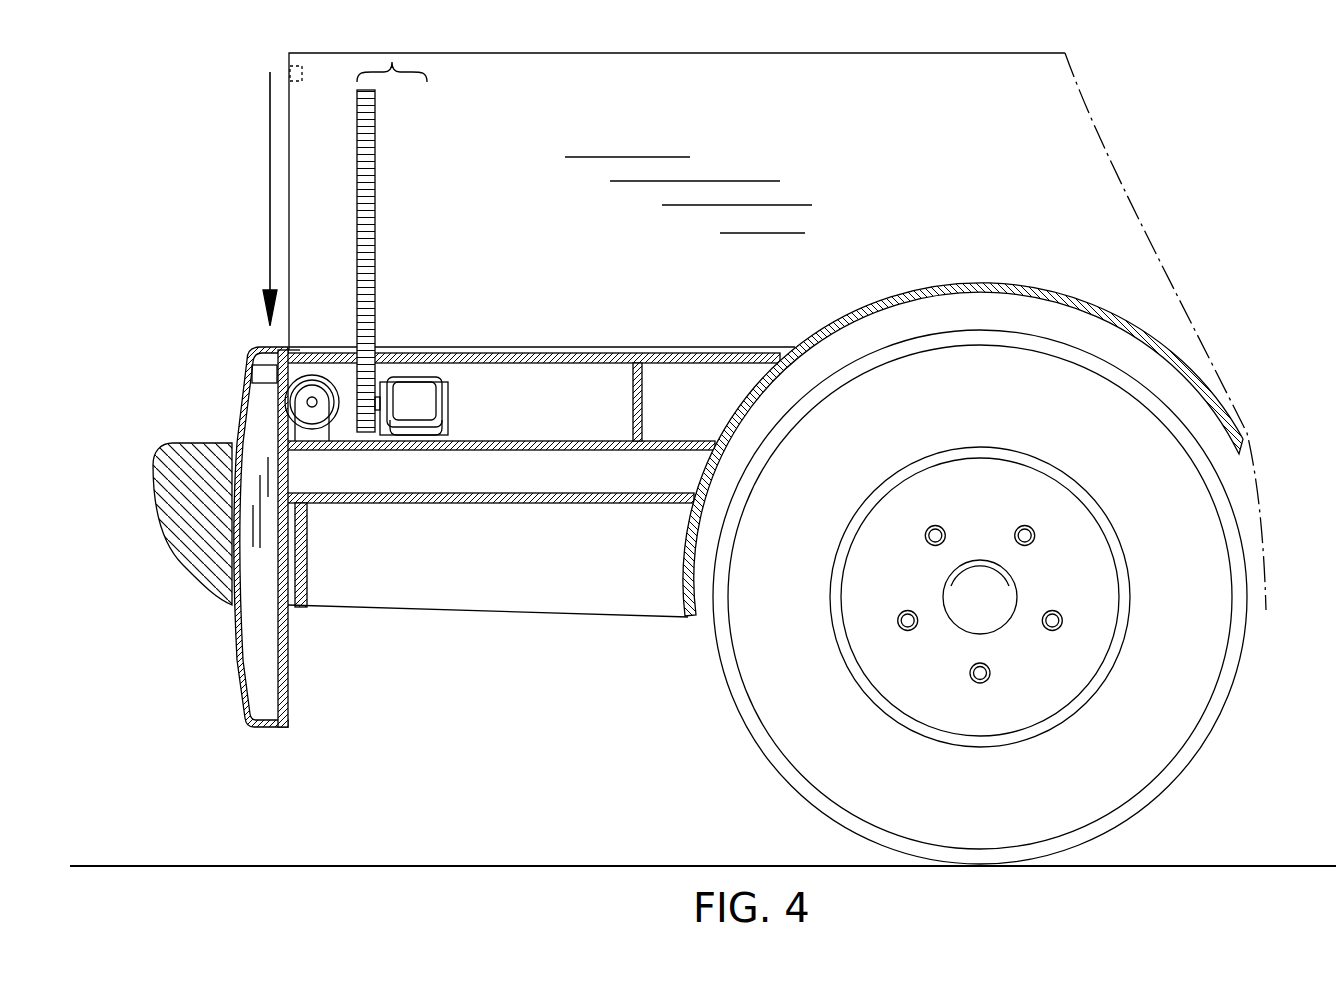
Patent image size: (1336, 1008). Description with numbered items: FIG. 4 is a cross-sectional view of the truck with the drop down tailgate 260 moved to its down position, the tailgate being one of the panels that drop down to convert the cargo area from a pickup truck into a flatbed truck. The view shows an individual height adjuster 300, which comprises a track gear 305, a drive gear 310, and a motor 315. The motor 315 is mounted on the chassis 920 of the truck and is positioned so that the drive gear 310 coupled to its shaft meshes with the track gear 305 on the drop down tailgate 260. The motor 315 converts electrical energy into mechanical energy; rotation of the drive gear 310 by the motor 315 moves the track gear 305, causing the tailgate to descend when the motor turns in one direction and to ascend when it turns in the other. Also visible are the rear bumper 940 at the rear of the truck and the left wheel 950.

The height adjuster 300 is at (392, 62).
The track gear 305 is at (368, 203).
The drive gear 310 is at (363, 420).
The motor 315 is at (412, 397).
The chassis 920 is at (593, 450).
The rear bumper 940 is at (183, 510).
The drop down tailgate 260 is at (237, 660).
The left wheel 950 is at (1185, 753).